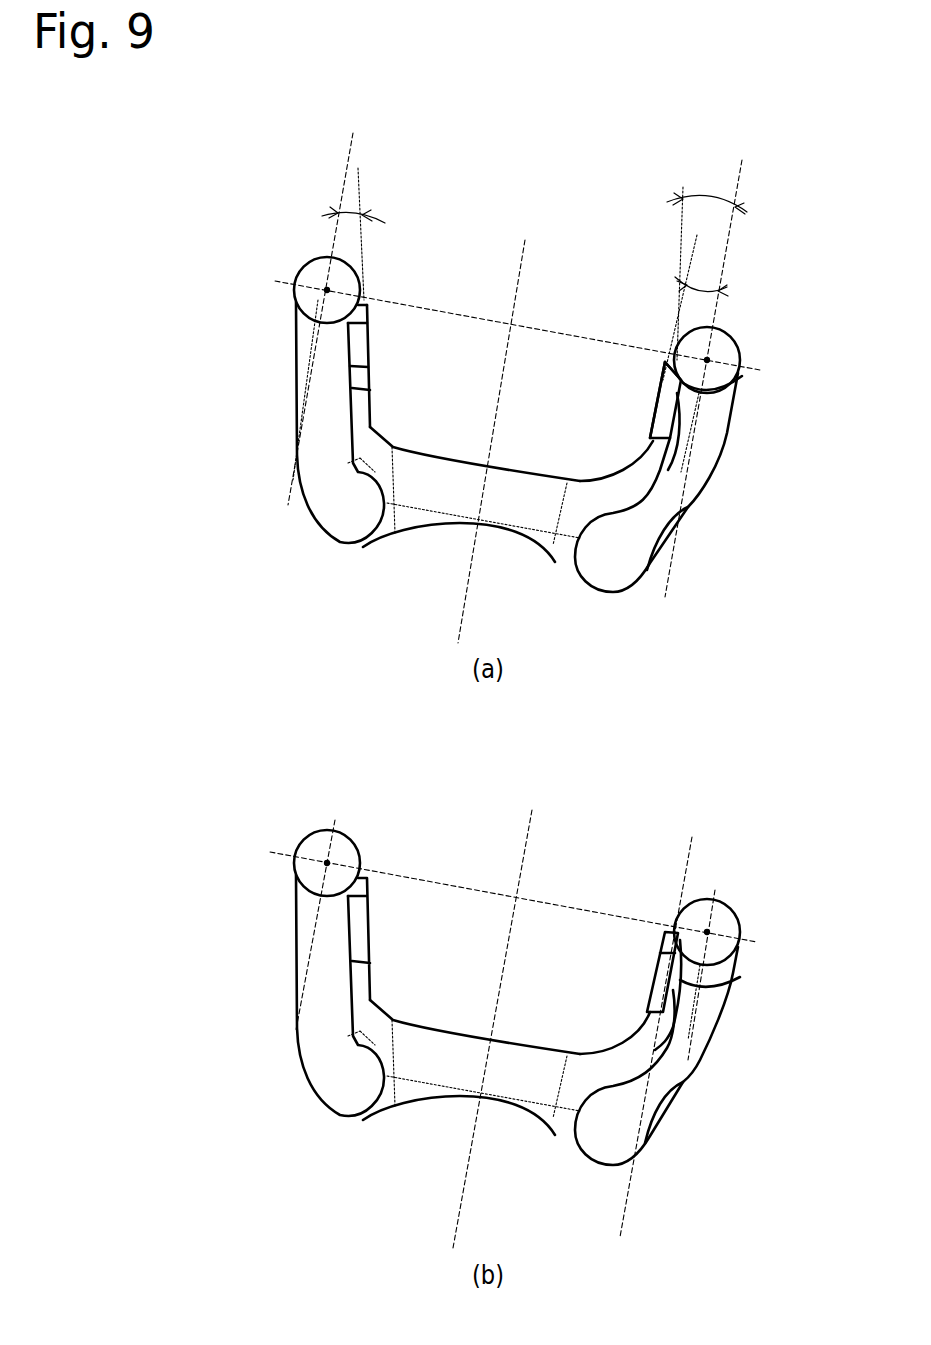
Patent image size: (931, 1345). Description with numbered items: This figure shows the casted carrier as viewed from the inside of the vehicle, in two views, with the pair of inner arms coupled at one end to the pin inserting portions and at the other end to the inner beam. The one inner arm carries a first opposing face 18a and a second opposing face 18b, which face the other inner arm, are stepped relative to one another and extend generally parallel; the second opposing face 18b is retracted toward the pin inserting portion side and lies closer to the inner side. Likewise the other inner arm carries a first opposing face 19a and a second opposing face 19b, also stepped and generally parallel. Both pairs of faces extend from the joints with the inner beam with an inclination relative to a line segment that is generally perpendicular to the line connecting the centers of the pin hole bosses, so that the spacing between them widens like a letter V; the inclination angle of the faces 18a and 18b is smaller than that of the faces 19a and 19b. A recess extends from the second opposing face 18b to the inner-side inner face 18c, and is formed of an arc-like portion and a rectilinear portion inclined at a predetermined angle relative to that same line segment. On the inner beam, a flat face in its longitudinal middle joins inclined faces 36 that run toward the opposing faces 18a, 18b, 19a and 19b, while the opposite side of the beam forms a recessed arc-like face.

The first opposing face 18a is at (662, 367).
The second opposing face 18b is at (647, 380).
The inner-side inner face 18c is at (693, 402).
The first opposing face 19a is at (367, 343).
The second opposing face 19b is at (368, 367).
The inclined face 36 is at (372, 430).